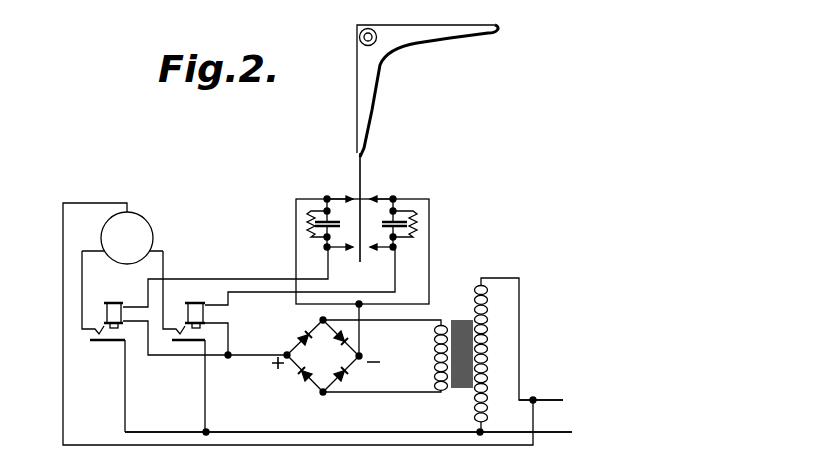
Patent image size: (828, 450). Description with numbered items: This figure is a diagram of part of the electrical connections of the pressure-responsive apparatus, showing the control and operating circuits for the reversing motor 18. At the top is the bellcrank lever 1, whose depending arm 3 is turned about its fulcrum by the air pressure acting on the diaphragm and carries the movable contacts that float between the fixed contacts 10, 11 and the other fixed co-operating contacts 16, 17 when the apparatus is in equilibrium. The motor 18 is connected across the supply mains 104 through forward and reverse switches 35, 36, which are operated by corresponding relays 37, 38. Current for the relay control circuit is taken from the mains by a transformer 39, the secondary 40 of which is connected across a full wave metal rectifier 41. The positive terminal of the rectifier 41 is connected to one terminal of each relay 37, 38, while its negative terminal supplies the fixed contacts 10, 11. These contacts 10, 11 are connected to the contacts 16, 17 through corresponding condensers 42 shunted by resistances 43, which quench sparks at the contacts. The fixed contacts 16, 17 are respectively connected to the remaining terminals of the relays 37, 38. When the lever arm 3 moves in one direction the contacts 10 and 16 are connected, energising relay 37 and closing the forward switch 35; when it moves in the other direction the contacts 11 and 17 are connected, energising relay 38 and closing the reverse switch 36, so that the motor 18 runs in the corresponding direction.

The bellcrank lever 1 is at (441, 39).
The depending arm 3 is at (369, 117).
The fixed contact 10 is at (338, 192).
The fixed contact 11 is at (397, 190).
The fixed co-operating contact 16 is at (334, 250).
The fixed co-operating contact 17 is at (385, 250).
The reversing motor 18 is at (145, 221).
The forward switch 35 is at (104, 342).
The reverse switch 36 is at (186, 342).
The relay 37 is at (110, 302).
The relay 38 is at (198, 302).
The transformer 39 is at (486, 322).
The secondary 40 is at (434, 378).
The full wave metal rectifier 41 is at (309, 384).
The condenser 42 is at (311, 239).
The resistance 43 is at (305, 219).
The supply mains 104 is at (553, 432).